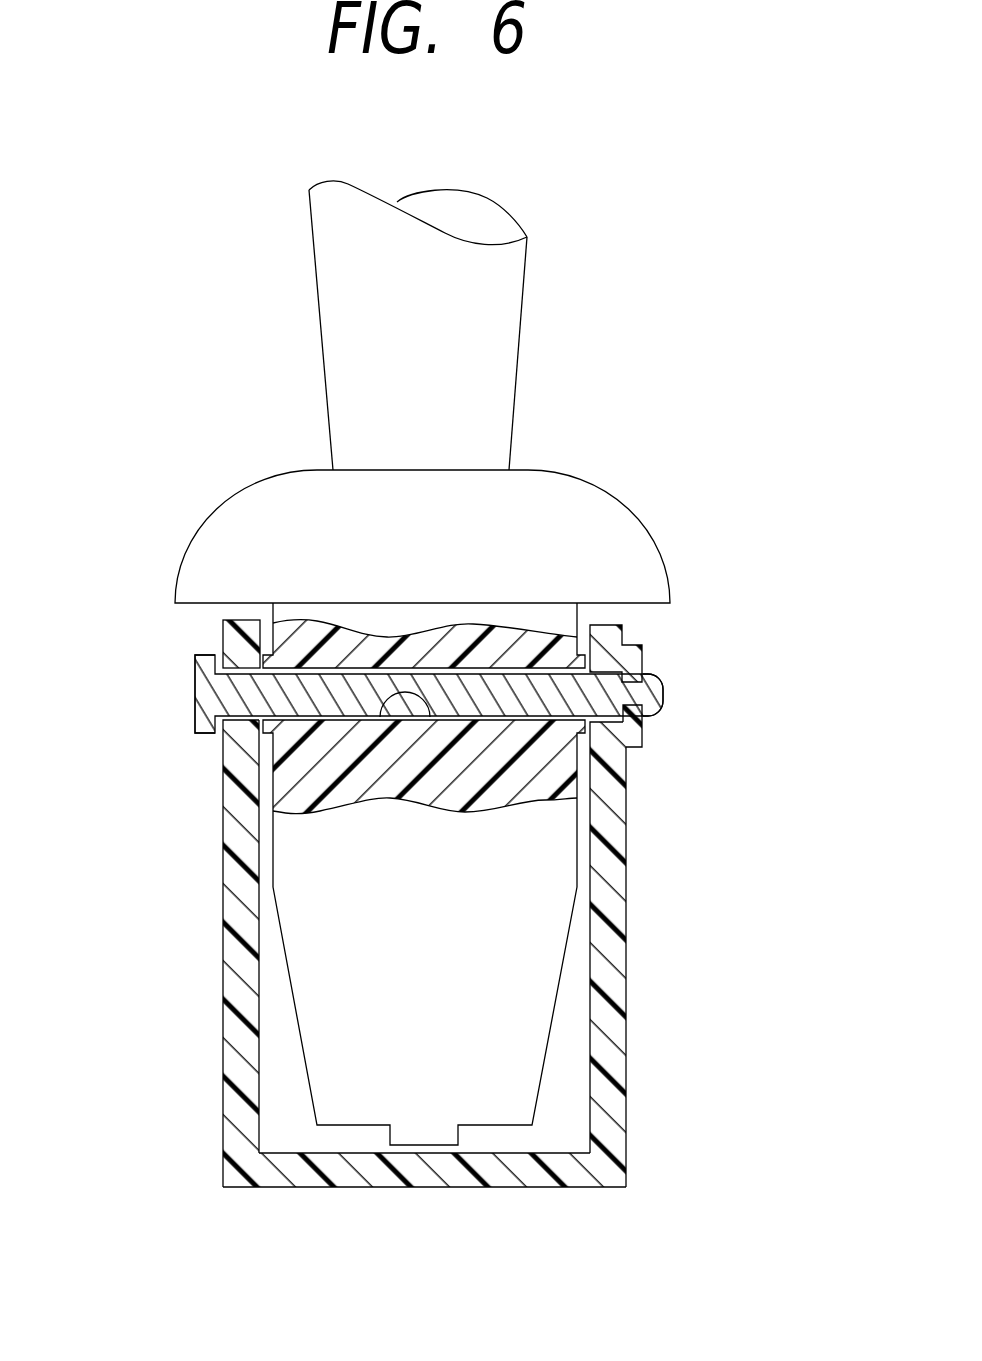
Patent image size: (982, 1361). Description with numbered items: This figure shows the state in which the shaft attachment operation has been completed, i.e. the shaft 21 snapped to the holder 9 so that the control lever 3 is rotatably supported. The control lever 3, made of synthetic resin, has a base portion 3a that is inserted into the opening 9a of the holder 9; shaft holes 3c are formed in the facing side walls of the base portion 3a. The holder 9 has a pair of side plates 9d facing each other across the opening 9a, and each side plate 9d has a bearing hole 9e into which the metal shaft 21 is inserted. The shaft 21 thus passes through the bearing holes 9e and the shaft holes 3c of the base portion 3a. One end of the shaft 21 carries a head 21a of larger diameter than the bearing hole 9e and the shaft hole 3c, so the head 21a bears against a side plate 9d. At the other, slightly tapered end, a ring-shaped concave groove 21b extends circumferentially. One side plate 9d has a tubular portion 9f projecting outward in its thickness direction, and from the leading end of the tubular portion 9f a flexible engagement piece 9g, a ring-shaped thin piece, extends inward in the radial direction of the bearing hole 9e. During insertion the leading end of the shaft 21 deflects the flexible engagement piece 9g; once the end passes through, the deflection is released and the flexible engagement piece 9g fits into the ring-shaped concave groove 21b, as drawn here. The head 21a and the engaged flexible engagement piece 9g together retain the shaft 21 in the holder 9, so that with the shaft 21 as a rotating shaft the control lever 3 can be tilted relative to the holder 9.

The control lever 3 is at (323, 354).
The base portion 3a is at (512, 1100).
The shaft hole 3c is at (429, 718).
The holder 9 is at (538, 1188).
The opening 9a is at (260, 637).
The side plate 9d is at (238, 1108).
The bearing hole 9e is at (663, 693).
The tubular portion 9f is at (632, 747).
The flexible engagement piece 9g is at (643, 735).
The shaft 21 is at (515, 688).
The head 21a is at (203, 733).
The ring-shaped concave groove 21b is at (643, 662).